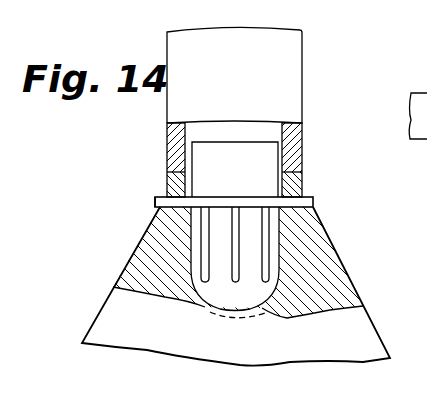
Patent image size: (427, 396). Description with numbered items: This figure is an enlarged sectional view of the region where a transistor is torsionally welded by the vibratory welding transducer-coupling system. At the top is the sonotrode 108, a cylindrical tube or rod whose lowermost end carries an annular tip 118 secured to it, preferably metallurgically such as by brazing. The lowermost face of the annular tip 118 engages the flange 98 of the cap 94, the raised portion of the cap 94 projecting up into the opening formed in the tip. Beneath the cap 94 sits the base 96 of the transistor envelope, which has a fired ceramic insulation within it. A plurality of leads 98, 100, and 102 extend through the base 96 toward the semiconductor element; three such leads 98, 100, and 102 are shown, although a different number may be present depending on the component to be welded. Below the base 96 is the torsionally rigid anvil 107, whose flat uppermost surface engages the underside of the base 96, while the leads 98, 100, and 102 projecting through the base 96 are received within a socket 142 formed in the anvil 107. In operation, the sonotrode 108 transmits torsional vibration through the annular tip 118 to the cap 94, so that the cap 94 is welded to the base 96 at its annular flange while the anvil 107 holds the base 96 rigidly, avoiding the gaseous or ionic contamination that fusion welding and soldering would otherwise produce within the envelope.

The cap 94 is at (222, 163).
The base 96 is at (160, 205).
The lead 98 is at (313, 200).
The lead 100 is at (233, 283).
The lead 102 is at (268, 262).
The torsionally rigid anvil 107 is at (327, 298).
The sonotrode 108 is at (293, 69).
The annular tip 118 is at (292, 183).
The socket 142 is at (247, 298).